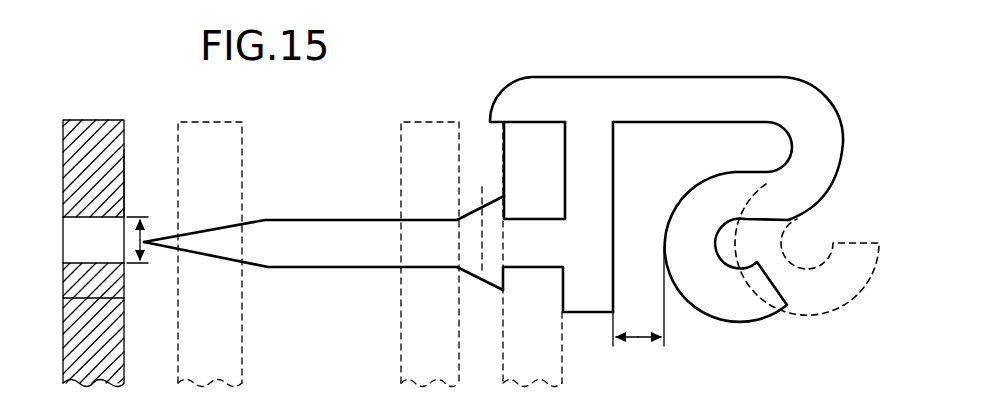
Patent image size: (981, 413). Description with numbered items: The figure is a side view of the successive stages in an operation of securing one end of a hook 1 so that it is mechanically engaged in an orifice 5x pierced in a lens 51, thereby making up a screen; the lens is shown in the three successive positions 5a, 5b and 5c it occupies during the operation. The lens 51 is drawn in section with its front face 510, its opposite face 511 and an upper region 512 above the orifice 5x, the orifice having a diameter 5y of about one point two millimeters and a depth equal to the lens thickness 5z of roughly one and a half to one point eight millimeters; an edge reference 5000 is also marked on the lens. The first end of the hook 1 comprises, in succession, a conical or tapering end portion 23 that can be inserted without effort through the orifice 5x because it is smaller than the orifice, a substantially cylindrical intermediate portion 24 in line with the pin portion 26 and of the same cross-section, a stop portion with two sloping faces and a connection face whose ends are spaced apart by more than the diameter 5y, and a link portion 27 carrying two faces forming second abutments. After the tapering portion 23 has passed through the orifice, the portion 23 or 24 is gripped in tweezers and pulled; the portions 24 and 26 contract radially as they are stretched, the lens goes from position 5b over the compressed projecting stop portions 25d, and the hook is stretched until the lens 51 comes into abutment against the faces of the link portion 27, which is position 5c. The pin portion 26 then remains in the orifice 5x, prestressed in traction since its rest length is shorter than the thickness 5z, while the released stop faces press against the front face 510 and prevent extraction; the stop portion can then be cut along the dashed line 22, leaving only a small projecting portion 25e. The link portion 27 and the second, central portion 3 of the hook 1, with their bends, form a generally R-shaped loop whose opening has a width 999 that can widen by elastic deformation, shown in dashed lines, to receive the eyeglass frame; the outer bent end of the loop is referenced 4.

The hook 1 is at (406, 84).
The second portion 3 is at (598, 78).
The hook 4 is at (790, 188).
The dashed line 22 is at (460, 276).
The end portion 23 is at (208, 250).
The intermediate portion 24 is at (337, 232).
The compressed stop portion 25d is at (459, 268).
The projecting portion 25e is at (493, 200).
The pin portion 26 is at (573, 248).
The link portion 27 is at (602, 173).
The lens 51 is at (121, 382).
The front face 510 is at (63, 318).
The panel right face 511 is at (124, 318).
The panel upper portion 512 is at (97, 119).
The panel edge 5000 is at (113, 187).
The first lens position 5a is at (249, 149).
The second lens position 5b is at (431, 118).
The third lens position 5c is at (558, 348).
The orifice 5x is at (70, 237).
The diameter 5y is at (143, 237).
The thickness 5z is at (93, 282).
The width 999 is at (638, 296).